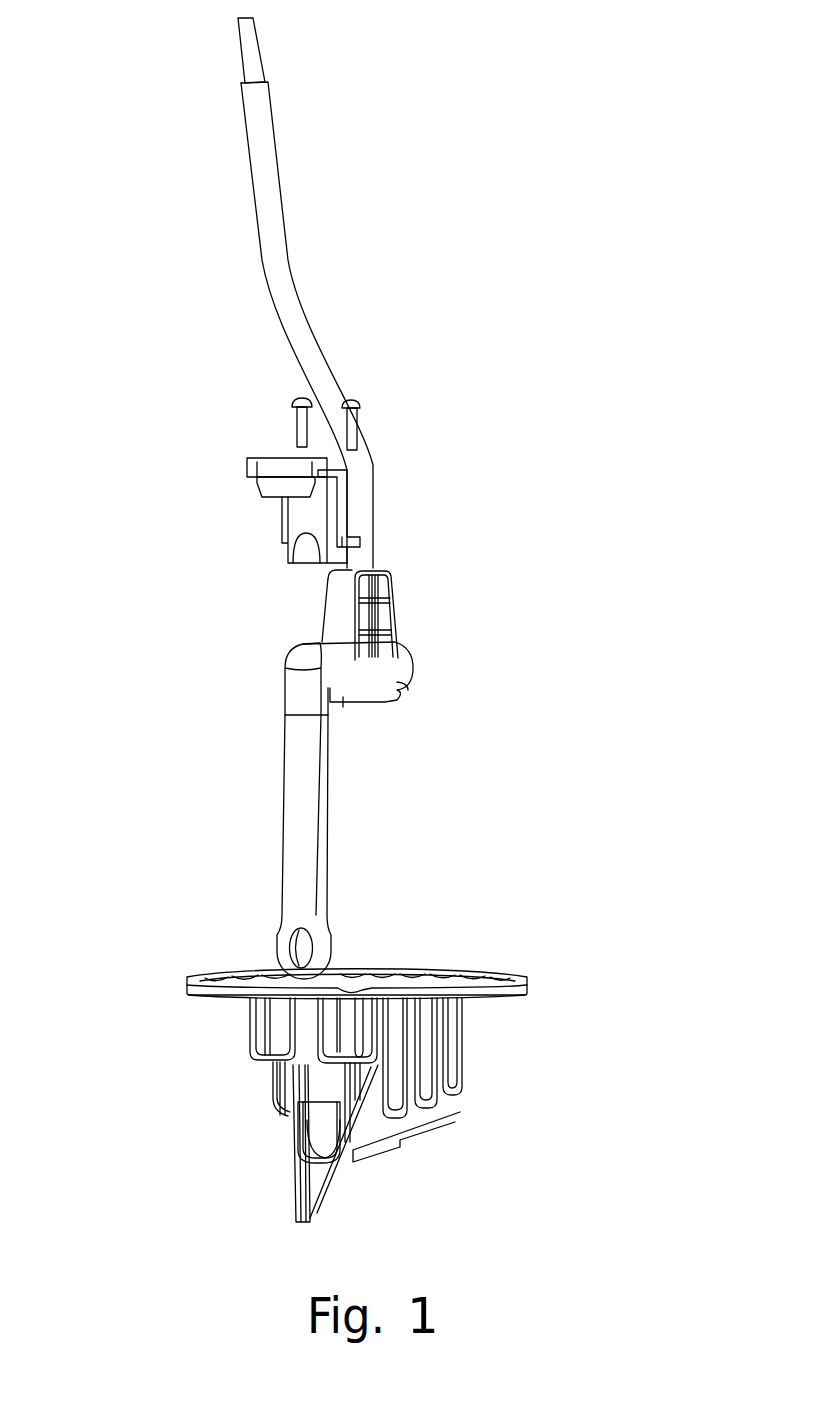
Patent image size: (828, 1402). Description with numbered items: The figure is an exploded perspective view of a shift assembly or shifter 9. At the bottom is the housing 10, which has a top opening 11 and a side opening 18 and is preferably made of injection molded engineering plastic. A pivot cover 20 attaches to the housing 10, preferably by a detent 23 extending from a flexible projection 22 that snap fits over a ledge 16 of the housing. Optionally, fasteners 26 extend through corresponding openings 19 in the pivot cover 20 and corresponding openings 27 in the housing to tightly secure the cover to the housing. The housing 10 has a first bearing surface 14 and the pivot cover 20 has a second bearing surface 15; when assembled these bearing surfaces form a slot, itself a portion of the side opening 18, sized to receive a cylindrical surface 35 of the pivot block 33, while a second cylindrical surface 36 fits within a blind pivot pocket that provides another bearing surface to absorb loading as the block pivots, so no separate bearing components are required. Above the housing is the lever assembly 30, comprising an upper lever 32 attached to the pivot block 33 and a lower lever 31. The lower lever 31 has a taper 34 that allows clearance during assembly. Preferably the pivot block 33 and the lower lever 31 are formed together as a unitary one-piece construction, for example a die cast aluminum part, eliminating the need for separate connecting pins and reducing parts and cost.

The shift assembly 9 is at (703, 1233).
The housing 10 is at (504, 1039).
The top opening 11 is at (397, 969).
The first bearing surface 14 is at (303, 1155).
The second bearing surface 15 is at (310, 555).
The ledge 16 is at (290, 1065).
The side opening 18 is at (200, 1131).
The openings 19 is at (343, 543).
The pivot cover 20 is at (322, 523).
The flexible projection 22 is at (260, 481).
The detent 23 is at (273, 497).
The fasteners 26 is at (341, 413).
The openings 27 is at (338, 1135).
The lever assembly 30 is at (88, 5).
The lower lever 31 is at (290, 808).
The upper lever 32 is at (267, 148).
The pivot block 33 is at (410, 688).
The taper 34 is at (303, 648).
The cylindrical surface 35 is at (343, 697).
The second cylindrical surface 36 is at (413, 655).